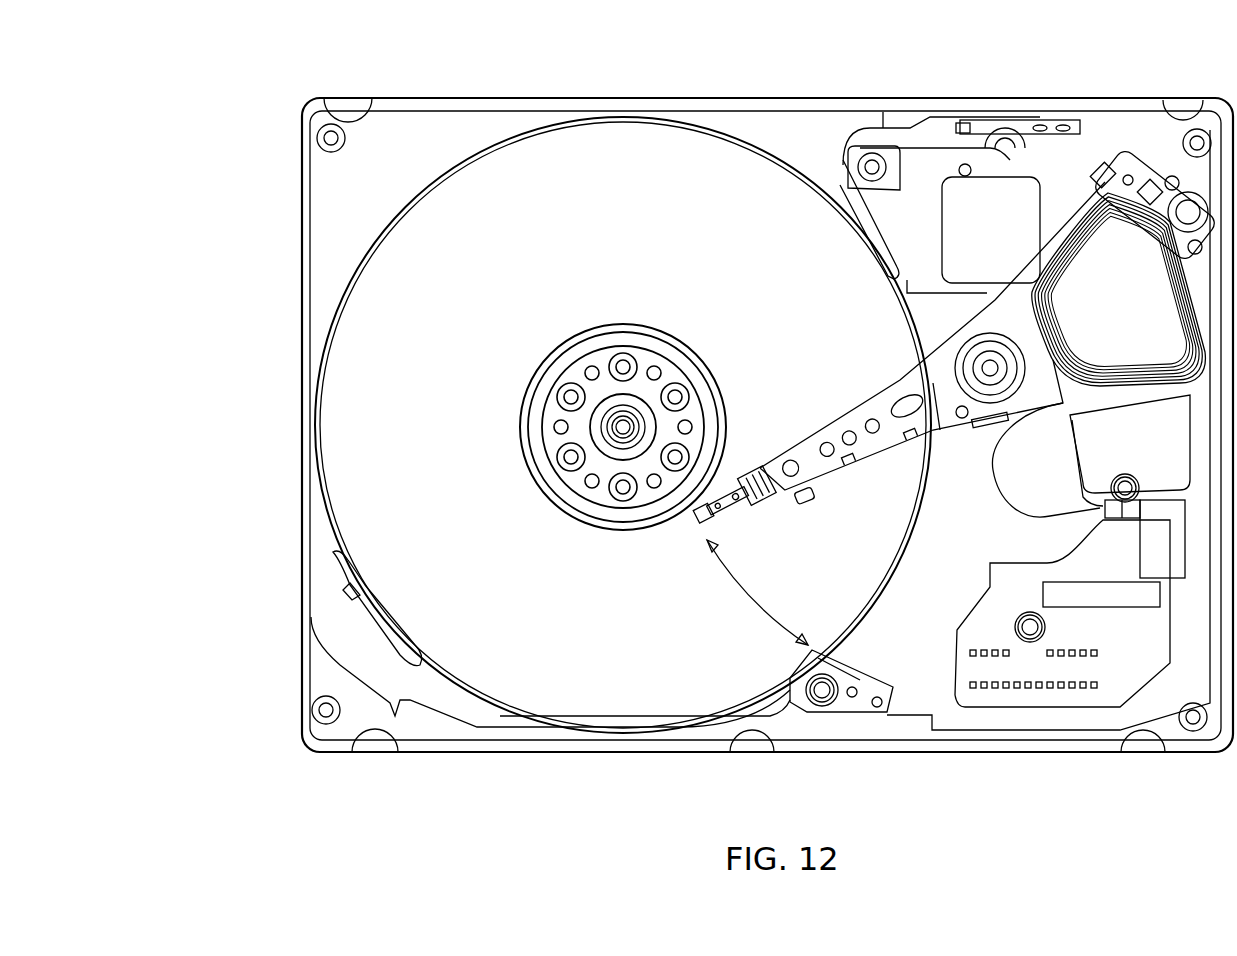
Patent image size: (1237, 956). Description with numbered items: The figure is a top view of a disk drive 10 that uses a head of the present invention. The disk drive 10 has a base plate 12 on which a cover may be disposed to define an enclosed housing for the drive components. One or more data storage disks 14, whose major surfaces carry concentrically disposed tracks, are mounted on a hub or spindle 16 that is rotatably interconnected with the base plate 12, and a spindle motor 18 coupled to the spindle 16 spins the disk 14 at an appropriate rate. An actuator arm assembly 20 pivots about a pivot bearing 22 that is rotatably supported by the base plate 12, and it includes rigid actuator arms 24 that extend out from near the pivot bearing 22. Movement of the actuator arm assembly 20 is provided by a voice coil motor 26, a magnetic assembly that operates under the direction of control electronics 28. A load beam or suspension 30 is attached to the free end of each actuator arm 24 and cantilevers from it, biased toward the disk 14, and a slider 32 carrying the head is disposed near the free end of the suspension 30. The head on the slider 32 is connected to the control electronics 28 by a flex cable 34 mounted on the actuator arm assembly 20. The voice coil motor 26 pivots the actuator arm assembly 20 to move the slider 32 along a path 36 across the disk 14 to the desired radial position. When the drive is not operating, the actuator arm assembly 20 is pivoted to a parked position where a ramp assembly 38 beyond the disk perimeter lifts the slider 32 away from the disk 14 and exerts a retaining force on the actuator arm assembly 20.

The disk drive 10 is at (230, 188).
The base plate 12 is at (507, 98).
The data storage disk 14 is at (640, 150).
The spindle 16 is at (650, 330).
The spindle motor 18 is at (598, 402).
The actuator arm assembly 20 is at (868, 393).
The pivot bearing 22 is at (985, 395).
The actuator arm 24 is at (838, 475).
The voice coil motor 26 is at (1125, 267).
The control electronics 28 is at (1035, 693).
The suspension 30 is at (737, 470).
The slider 32 is at (692, 522).
The flex cable 34 is at (1000, 508).
The path 36 is at (752, 600).
The ramp assembly 38 is at (848, 710).